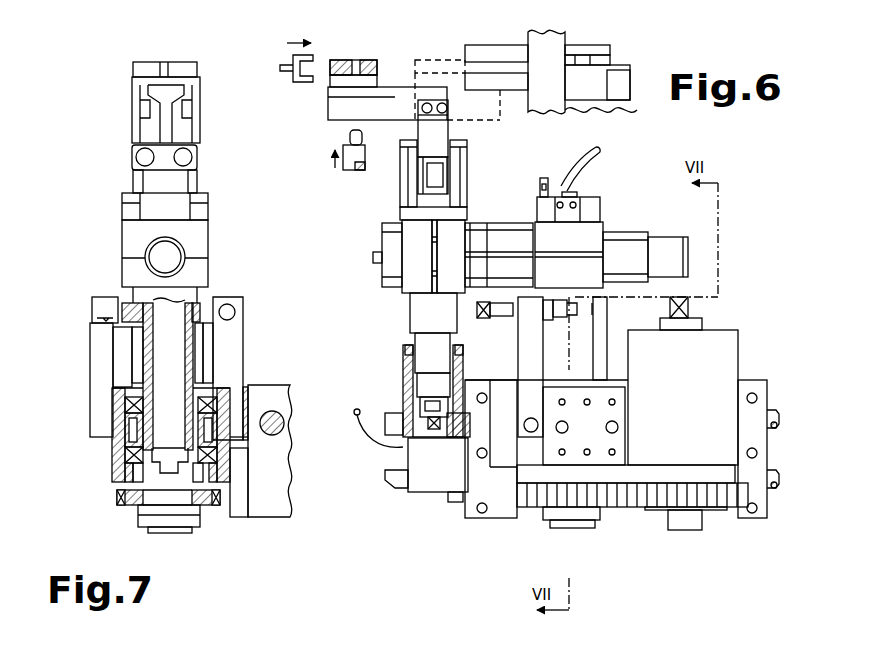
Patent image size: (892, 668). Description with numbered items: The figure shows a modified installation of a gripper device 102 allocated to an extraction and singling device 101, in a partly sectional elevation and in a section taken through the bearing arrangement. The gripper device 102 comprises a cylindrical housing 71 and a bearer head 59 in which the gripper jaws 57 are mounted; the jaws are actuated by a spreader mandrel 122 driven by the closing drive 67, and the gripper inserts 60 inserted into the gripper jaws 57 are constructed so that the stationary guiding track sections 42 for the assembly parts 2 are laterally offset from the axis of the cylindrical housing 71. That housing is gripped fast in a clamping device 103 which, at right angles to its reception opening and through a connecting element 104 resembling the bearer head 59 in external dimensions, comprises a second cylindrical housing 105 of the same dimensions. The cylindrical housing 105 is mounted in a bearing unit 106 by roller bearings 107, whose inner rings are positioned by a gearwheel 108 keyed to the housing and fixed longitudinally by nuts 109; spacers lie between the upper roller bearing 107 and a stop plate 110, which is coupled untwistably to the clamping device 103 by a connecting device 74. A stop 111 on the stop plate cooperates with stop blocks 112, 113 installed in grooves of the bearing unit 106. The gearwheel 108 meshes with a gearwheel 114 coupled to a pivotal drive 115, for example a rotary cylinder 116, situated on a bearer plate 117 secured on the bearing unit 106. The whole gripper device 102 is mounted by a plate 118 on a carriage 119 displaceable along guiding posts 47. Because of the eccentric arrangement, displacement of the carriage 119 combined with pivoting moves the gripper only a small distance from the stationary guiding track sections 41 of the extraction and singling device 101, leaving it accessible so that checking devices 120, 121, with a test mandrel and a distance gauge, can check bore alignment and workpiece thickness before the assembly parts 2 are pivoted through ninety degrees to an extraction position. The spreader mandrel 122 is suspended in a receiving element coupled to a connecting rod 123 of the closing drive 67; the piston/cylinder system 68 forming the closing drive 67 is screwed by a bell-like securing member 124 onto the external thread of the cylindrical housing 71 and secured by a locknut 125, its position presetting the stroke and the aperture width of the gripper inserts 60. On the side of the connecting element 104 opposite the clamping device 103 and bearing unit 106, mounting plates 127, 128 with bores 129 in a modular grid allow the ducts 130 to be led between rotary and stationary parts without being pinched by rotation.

In FIG. 6, the assembly parts 2 is at (372, 60).
In FIG. 6, the stationary guiding track sections 41 is at (586, 49).
In FIG. 6, the stationary guiding track sections 42 is at (327, 66).
In FIG. 6, the guiding posts 47 is at (772, 489).
In FIG. 6, the gripper jaws 57 is at (440, 128).
In FIG. 6, the bearer head 59 is at (462, 158).
In FIG. 6, the gripper inserts 60 is at (370, 108).
In FIG. 6, the closing drive 67 is at (424, 507).
In FIG. 6, the piston/cylinder system 68 is at (440, 478).
In FIG. 6, the cylindrical housing 71 is at (425, 322).
In FIG. 7, the connecting device 74 is at (203, 306).
In FIG. 6, the extraction and singling device 101 is at (657, 36).
In FIG. 6, the gripper device 102 is at (371, 206).
In FIG. 7, the clamping device 103 is at (110, 246).
In FIG. 6, the clamping device 103 is at (608, 219).
In FIG. 7, the connecting element 104 is at (185, 290).
In FIG. 6, the connecting element 104 is at (472, 240).
In FIG. 7, the cylindrical housing 105 is at (205, 492).
In FIG. 6, the cylindrical housing 105 is at (550, 350).
In FIG. 7, the bearing unit 106 is at (112, 446).
In FIG. 6, the bearing unit 106 is at (513, 453).
In FIG. 7, the roller bearings 107 is at (128, 388).
In FIG. 7, the gearwheel 108 is at (208, 506).
In FIG. 7, the nuts 109 is at (178, 512).
In FIG. 7, the stop plate 110 is at (128, 305).
In FIG. 7, the stop 111 is at (102, 300).
In FIG. 7, the stop block 112 is at (90, 336).
In FIG. 7, the stop block 113 is at (232, 355).
In FIG. 6, the gearwheel 114 is at (720, 498).
In FIG. 6, the pivotal drive 115 is at (719, 316).
In FIG. 6, the rotary cylinder 116 is at (719, 340).
In FIG. 6, the bearer plate 117 is at (610, 470).
In FIG. 7, the plate 118 is at (243, 507).
In FIG. 6, the plate 118 is at (742, 393).
In FIG. 7, the carriage 119 is at (270, 492).
In FIG. 6, the carriage 119 is at (704, 667).
In FIG. 6, the checking device 120 is at (350, 172).
In FIG. 6, the checking device 121 is at (298, 92).
In FIG. 6, the spreader mandrel 122 is at (430, 385).
In FIG. 6, the connecting rod 123 is at (428, 440).
In FIG. 6, the bell-like securing member 124 is at (410, 401).
In FIG. 6, the locknut 125 is at (405, 350).
In FIG. 6, the mounting plate 127 is at (594, 200).
In FIG. 6, the mounting plate 128 is at (573, 455).
In FIG. 6, the bores 129 is at (616, 452).
In FIG. 6, the ducts 130 is at (575, 178).